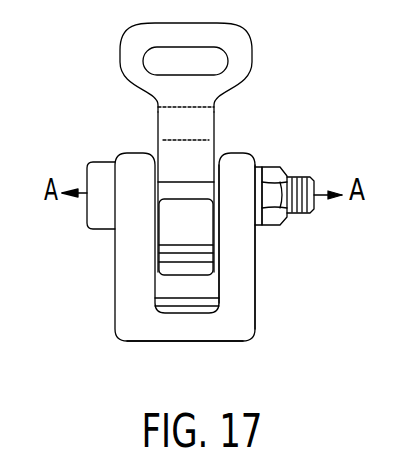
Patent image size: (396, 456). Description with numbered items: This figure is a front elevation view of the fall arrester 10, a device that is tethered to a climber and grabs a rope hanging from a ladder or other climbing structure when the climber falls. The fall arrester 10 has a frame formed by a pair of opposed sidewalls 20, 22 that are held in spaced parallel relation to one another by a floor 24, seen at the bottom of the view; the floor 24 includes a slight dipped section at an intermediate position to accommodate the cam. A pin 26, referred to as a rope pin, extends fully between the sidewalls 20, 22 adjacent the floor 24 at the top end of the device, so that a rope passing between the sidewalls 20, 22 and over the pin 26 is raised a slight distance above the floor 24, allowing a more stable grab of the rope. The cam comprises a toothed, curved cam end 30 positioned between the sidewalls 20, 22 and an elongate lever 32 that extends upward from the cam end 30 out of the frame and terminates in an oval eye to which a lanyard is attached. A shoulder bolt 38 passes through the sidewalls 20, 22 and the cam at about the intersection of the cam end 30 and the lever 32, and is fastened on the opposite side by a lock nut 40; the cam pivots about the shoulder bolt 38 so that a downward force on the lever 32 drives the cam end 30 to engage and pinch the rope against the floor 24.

The fall arrester 10 is at (300, 96).
The sidewall 20 is at (140, 267).
The sidewall 22 is at (240, 285).
The floor 24 is at (168, 328).
The pin 26 is at (193, 313).
The cam end 30 is at (203, 247).
The lever 32 is at (207, 113).
The shoulder bolt 38 is at (102, 178).
The lock nut 40 is at (270, 178).